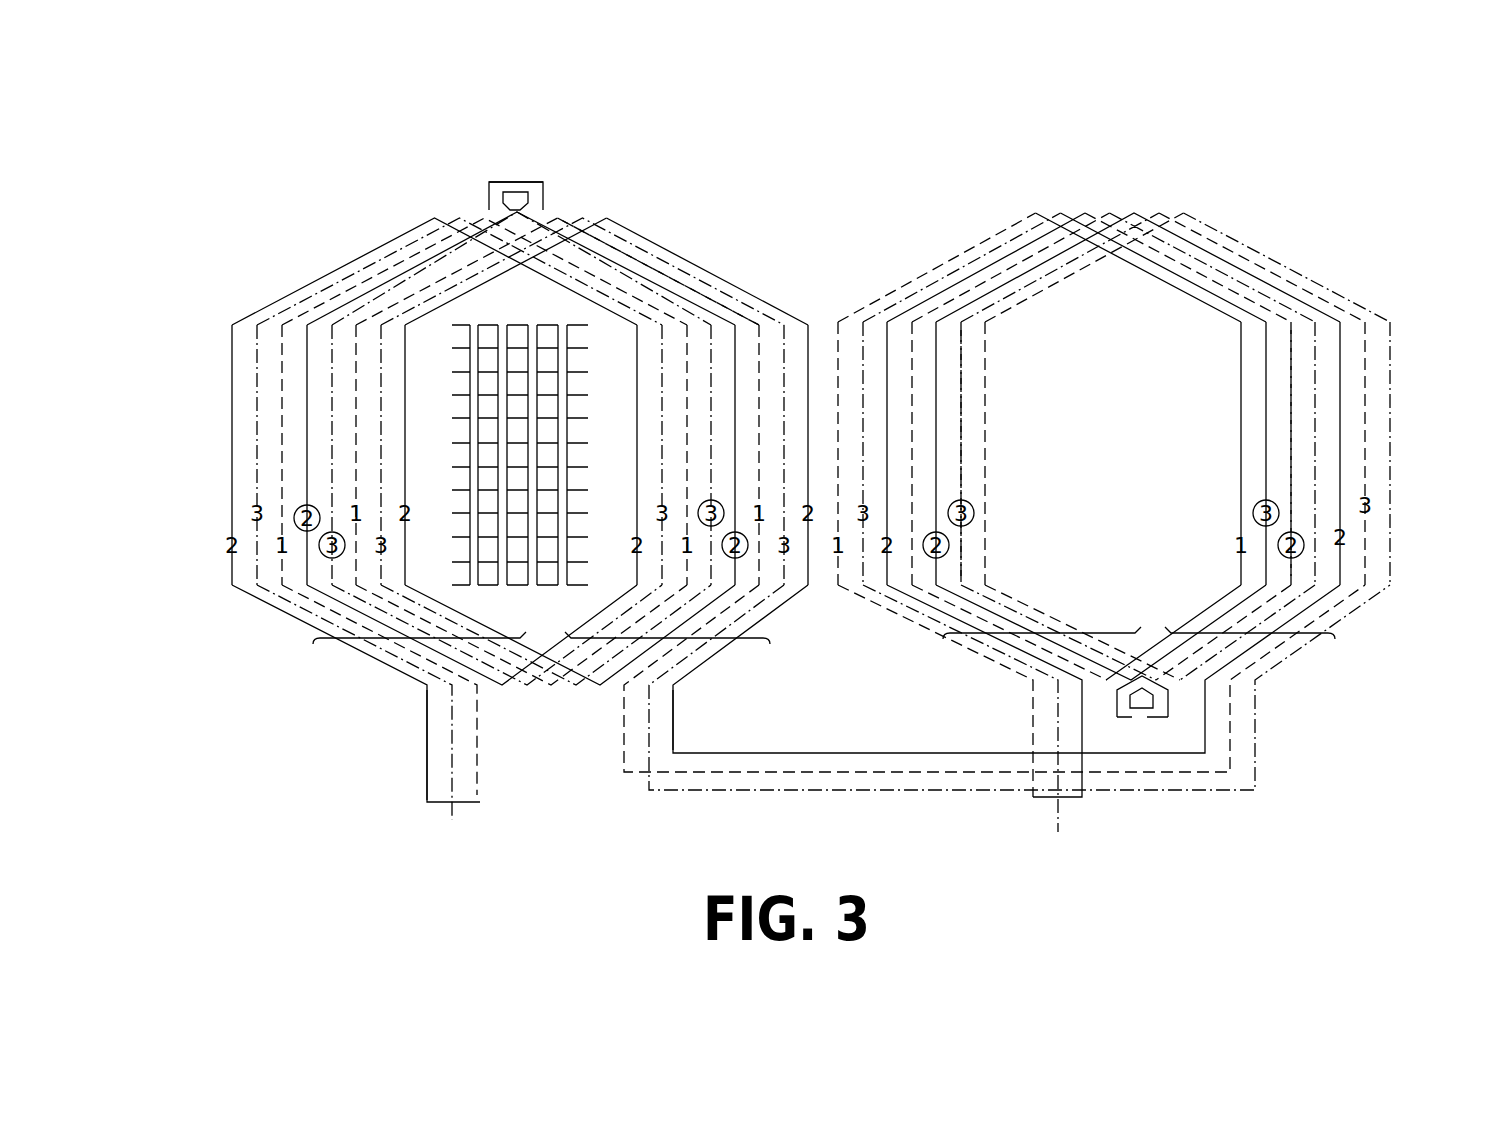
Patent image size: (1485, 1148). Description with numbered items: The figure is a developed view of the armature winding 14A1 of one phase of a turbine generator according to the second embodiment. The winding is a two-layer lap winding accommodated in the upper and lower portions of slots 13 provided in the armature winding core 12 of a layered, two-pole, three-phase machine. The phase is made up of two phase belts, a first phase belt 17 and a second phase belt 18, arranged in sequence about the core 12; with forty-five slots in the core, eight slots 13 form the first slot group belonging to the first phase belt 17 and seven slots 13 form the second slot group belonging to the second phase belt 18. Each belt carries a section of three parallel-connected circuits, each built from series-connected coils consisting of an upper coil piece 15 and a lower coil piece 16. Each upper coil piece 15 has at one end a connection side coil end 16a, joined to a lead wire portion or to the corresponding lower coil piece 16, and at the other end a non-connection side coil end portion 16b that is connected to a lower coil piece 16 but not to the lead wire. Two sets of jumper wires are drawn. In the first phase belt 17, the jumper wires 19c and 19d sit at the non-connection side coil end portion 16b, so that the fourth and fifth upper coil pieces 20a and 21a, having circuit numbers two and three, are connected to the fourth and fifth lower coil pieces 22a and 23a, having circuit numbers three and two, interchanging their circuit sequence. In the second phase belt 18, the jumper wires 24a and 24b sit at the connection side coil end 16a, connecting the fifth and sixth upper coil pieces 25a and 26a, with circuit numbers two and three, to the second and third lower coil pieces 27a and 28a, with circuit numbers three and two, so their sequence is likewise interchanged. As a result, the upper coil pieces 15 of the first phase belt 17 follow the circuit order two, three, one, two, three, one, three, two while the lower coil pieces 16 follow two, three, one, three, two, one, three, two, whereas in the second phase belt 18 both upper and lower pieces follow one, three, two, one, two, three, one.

The armature winding core 12 is at (489, 338).
The slots 13 is at (536, 385).
The armature winding in one phase 14A1 is at (857, 306).
The upper coil piece 15 is at (408, 640).
The lower coil piece 16 is at (668, 640).
The connection side coil end 16a is at (422, 753).
The non-connection side coil end portion 16b is at (482, 186).
The first phase belt 17 is at (248, 304).
The second phase belt 18 is at (1228, 229).
The jumper wire 19c is at (535, 195).
The jumper wire 19d is at (522, 180).
The fourth upper coil piece 20a is at (328, 313).
The fifth upper coil piece 21a is at (403, 285).
The fourth lower coil piece 22a is at (622, 258).
The fifth lower coil piece 23a is at (697, 300).
The jumper wire 24a is at (1140, 705).
The jumper wire 24b is at (1132, 720).
The fifth upper coil piece 25a is at (975, 590).
The sixth upper coil piece 26a is at (1050, 618).
The second lower coil piece 27a is at (1312, 282).
The third lower coil piece 28a is at (1292, 392).